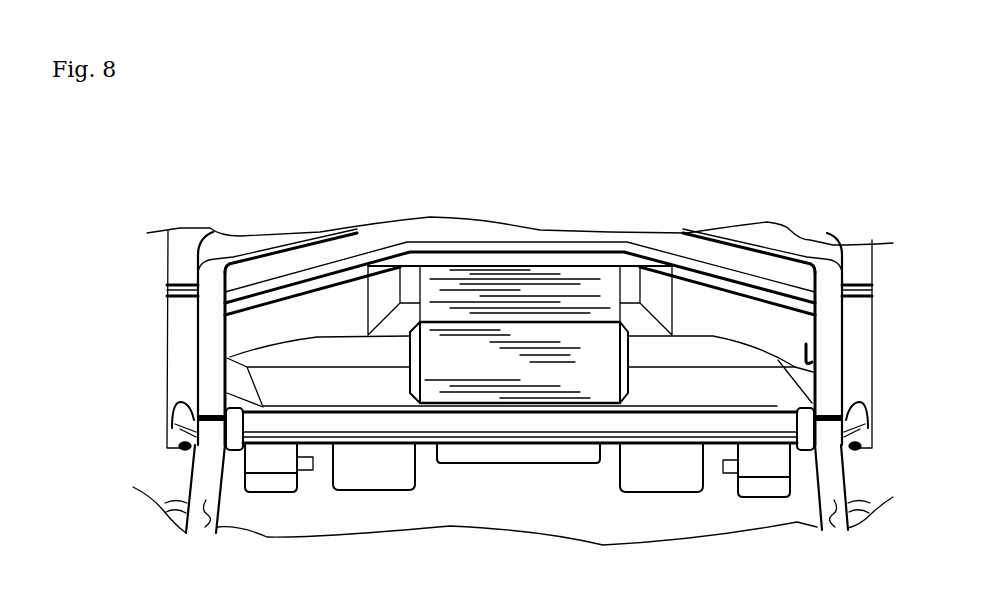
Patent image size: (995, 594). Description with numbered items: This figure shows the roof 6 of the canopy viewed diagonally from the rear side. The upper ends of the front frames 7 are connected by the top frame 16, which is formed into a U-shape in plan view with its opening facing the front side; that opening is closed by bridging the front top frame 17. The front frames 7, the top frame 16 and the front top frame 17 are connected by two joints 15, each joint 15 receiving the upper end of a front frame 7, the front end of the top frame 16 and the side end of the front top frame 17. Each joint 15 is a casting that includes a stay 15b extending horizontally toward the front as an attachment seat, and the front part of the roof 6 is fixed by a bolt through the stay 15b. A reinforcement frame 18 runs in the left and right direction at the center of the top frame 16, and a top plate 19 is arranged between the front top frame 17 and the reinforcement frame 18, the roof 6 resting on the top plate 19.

The roof 6 is at (354, 322).
The front frame 7 is at (218, 528).
The joint 15 is at (167, 410).
The stay 15b is at (183, 450).
The top frame 16 is at (210, 353).
The front top frame 17 is at (467, 430).
The reinforcement frame 18 is at (332, 248).
The top plate 19 is at (607, 385).